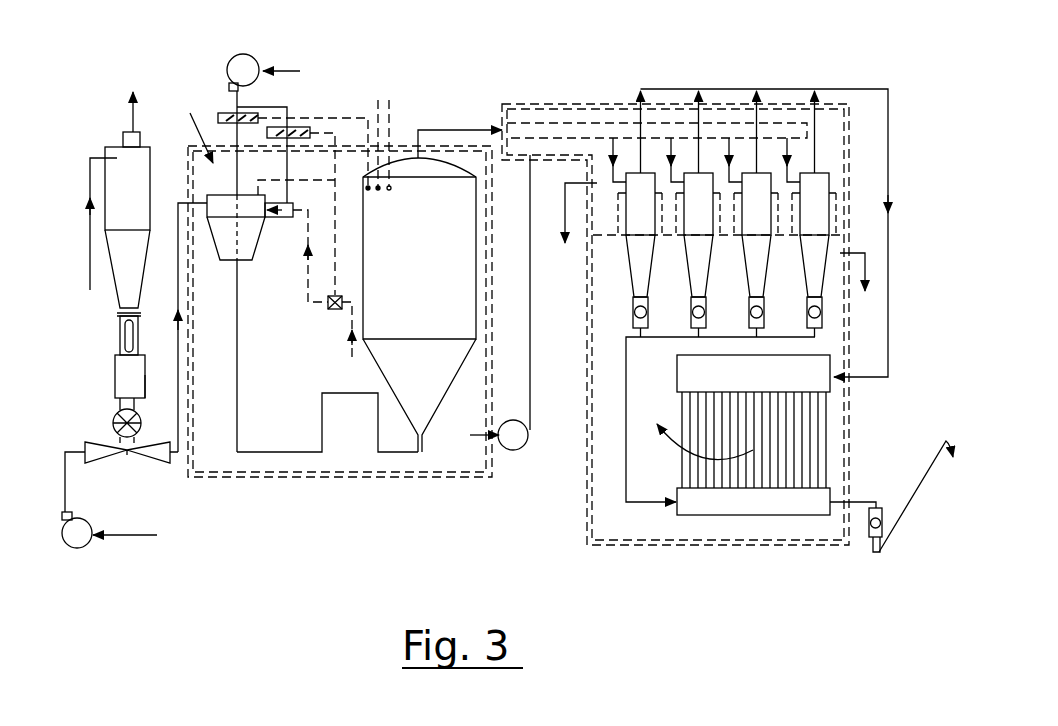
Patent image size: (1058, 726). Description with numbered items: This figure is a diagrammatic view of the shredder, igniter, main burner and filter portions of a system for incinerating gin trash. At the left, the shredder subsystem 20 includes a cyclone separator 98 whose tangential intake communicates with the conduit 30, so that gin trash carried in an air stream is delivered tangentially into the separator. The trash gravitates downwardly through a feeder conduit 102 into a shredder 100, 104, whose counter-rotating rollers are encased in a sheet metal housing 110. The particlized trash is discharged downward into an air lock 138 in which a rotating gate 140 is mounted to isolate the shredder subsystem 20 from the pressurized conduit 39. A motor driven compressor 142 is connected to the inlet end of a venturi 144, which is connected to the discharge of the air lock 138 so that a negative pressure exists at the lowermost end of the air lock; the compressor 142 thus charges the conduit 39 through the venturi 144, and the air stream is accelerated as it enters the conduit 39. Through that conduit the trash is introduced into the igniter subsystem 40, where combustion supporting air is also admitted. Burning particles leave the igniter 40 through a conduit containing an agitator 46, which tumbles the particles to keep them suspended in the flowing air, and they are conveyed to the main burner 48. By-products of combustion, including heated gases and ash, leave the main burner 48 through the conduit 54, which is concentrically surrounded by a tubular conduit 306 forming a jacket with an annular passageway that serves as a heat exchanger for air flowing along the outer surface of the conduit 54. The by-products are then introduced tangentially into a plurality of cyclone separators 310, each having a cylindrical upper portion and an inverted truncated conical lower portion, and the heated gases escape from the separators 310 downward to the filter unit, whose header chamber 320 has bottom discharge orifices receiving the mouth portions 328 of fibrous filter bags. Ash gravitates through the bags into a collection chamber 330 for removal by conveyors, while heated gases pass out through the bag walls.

The shredder subsystem 20 is at (82, 118).
The conduit 30 is at (90, 233).
The pressurized conduit 39 is at (178, 240).
The igniter subsystem 40 is at (213, 259).
The agitator 46 is at (322, 420).
The main burner 48 is at (427, 257).
The conduit 54 is at (445, 129).
The cyclone separator 98 is at (142, 194).
The shredder 100 is at (151, 351).
The feeder conduit 102 is at (123, 334).
The shredder 104 is at (120, 377).
The housing 110 is at (148, 389).
The air lock 138 is at (113, 418).
The rotating gate 140 is at (117, 412).
The motor driven compressor 142 is at (83, 522).
The venturi 144 is at (128, 463).
The tubular conduit 306 is at (533, 112).
The cyclone separators 310 is at (513, 449).
The header chamber 320 is at (815, 383).
The mouth portion 328 is at (802, 427).
The collection chamber 330 is at (812, 500).